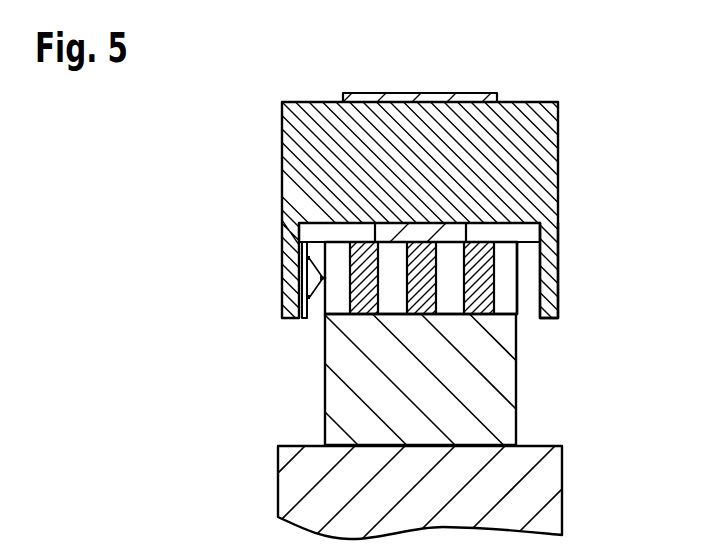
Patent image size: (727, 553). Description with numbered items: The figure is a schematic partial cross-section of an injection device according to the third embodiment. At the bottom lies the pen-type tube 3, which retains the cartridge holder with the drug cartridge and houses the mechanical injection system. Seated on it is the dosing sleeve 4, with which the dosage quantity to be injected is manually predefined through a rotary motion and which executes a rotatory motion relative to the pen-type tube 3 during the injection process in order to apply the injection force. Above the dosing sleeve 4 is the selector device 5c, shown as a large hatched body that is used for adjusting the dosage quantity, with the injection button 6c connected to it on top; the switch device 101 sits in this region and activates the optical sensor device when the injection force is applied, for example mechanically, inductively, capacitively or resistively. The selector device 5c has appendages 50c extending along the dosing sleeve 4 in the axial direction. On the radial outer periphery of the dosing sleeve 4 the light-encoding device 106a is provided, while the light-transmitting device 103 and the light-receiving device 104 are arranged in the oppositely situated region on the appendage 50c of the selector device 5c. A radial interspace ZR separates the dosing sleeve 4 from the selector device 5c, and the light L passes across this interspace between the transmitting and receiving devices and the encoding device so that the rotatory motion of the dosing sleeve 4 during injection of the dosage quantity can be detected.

The pen-type tube 3 is at (300, 485).
The dosing sleeve 4 is at (338, 392).
The selector device 5c is at (541, 125).
The injection button 6c is at (485, 100).
The appendage 50c is at (560, 298).
The switch device 101 is at (402, 100).
The light-transmitting device 103 is at (306, 297).
The light-receiving device 104 is at (306, 258).
The light-encoding device 106a is at (518, 295).
The light beam L is at (322, 283).
The radial interspace ZR is at (525, 252).